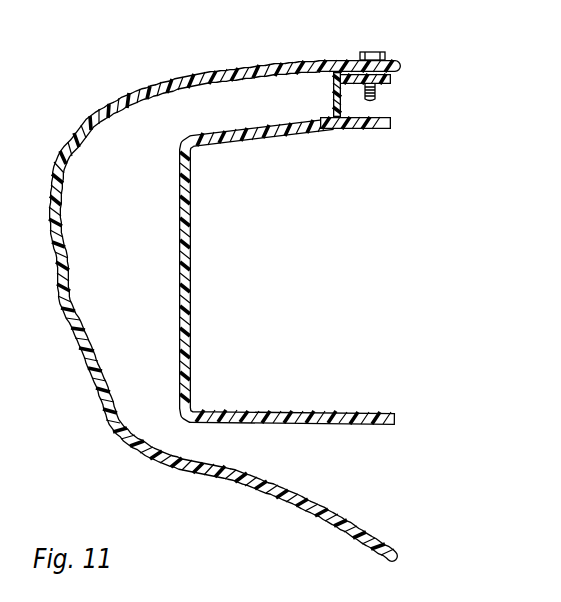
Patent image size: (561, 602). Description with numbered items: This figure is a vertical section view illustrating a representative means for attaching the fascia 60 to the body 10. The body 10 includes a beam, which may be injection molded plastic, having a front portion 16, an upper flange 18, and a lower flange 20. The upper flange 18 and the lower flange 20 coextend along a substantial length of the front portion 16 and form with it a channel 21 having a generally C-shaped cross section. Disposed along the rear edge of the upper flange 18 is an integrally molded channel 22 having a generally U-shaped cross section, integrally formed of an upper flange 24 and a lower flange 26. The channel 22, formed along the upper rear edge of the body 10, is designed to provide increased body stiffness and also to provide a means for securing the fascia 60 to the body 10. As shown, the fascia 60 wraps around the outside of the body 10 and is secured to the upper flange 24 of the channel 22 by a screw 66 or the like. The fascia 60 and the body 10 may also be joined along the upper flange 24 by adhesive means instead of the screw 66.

The body 10 is at (288, 282).
The front portion 16 is at (192, 278).
The upper flange 18 is at (250, 129).
The lower flange 20 is at (347, 426).
The channel 21 is at (355, 278).
The channel 22 is at (408, 98).
The upper flange 24 is at (390, 86).
The lower flange 26 is at (385, 99).
The fascia 60 is at (158, 83).
The screw 66 is at (383, 51).